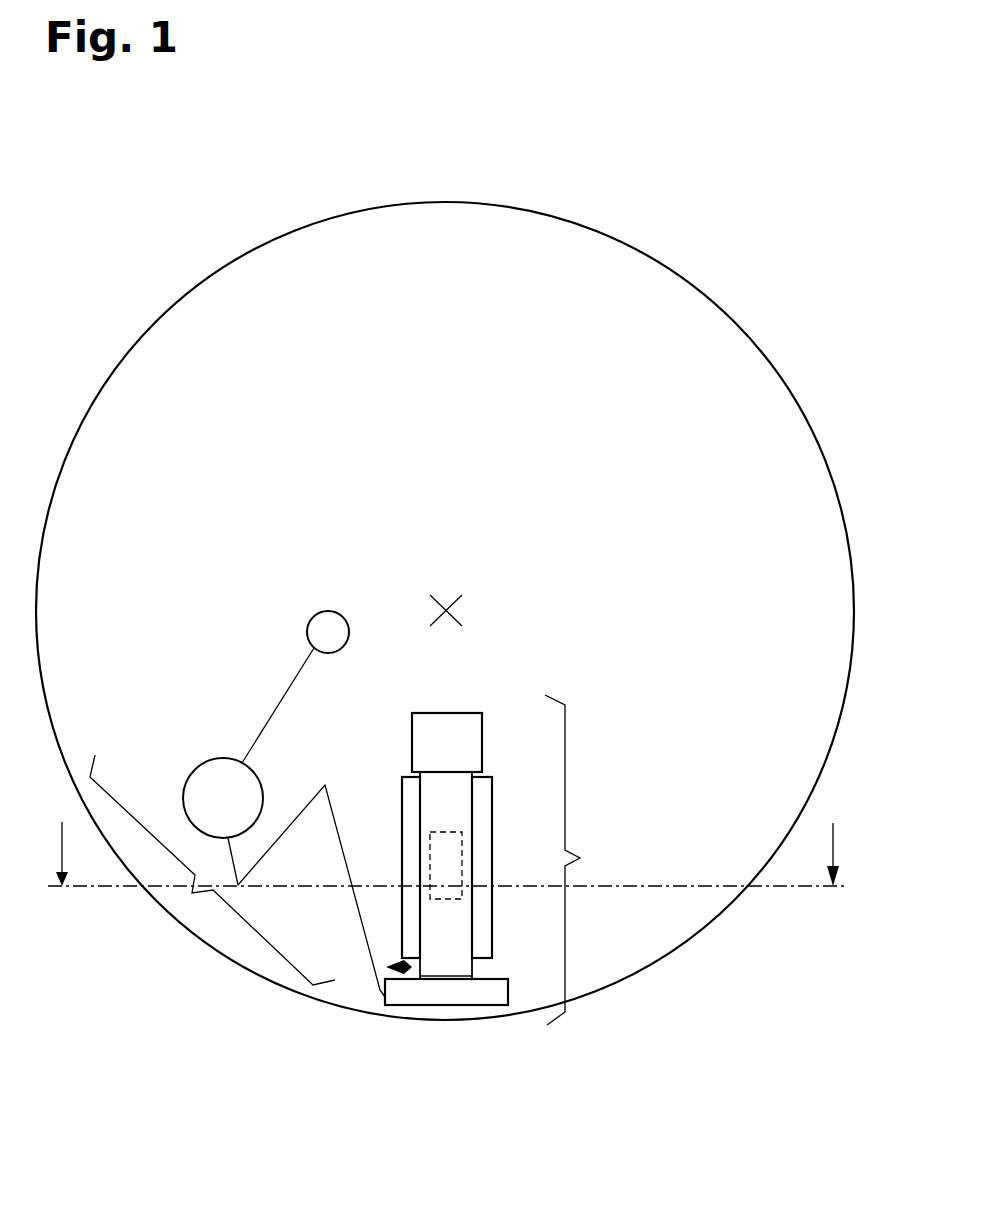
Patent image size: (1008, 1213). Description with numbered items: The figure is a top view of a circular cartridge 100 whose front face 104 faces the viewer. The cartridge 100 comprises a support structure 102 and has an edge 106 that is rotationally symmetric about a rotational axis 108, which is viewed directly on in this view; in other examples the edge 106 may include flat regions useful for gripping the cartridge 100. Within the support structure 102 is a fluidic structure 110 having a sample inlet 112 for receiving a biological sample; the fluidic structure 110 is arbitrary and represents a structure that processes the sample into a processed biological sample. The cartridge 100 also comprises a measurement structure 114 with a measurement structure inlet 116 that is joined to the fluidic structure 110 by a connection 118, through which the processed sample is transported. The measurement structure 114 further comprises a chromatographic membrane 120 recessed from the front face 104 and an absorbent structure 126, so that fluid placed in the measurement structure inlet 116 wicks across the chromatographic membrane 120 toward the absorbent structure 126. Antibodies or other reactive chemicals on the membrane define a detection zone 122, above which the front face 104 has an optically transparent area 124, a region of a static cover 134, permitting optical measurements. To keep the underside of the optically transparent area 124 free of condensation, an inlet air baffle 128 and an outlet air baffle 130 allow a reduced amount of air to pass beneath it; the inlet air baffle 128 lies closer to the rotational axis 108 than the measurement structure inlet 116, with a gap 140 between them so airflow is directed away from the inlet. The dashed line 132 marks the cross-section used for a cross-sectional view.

The cartridge 100 is at (628, 174).
The support structure 102 is at (595, 335).
The front face 104 is at (683, 355).
The edge 106 is at (800, 392).
The rotational axis 108 is at (456, 586).
The fluidic structure 110 is at (192, 893).
The sample inlet 112 is at (327, 610).
The measurement structure 114 is at (588, 860).
The measurement structure inlet 116 is at (447, 993).
The connection 118 is at (298, 812).
The chromatographic membrane 120 is at (462, 975).
The detection zone 122 is at (445, 862).
The optically transparent area 124 is at (447, 843).
The absorbent structure 126 is at (448, 725).
The inlet air baffle 128 is at (488, 789).
The outlet air baffle 130 is at (402, 790).
The dashed line 132 is at (835, 842).
The static cover 134 is at (445, 927).
The gap 140 is at (386, 967).